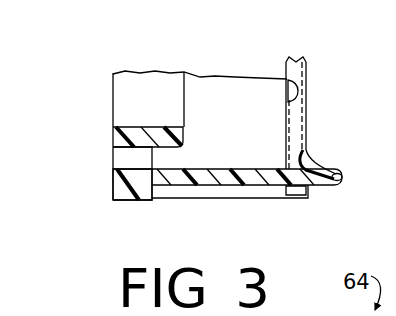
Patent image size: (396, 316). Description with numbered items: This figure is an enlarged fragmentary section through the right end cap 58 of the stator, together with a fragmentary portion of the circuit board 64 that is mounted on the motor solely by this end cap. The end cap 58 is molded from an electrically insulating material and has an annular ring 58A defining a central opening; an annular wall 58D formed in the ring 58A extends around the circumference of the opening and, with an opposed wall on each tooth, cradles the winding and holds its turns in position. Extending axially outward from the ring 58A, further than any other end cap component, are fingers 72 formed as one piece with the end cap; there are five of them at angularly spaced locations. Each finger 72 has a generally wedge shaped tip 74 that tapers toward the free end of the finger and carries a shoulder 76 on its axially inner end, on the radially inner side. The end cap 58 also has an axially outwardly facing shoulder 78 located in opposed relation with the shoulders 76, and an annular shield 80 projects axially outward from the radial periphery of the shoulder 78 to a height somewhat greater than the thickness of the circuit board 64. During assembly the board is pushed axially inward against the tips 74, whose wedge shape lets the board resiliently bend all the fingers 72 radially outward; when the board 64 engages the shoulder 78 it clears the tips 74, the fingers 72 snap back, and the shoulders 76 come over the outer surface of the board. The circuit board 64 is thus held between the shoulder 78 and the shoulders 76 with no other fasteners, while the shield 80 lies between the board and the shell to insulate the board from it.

The right end cap 58 is at (102, 144).
The annular wall 58D is at (178, 108).
The annular ring 58A is at (127, 200).
The fingers 72 is at (257, 181).
The annular shield 80 is at (308, 196).
The circuit board 64 is at (311, 72).
The axially outwardly facing shoulder 78 is at (292, 82).
The shoulder 76 is at (303, 150).
The wedge shaped tip 74 is at (342, 176).